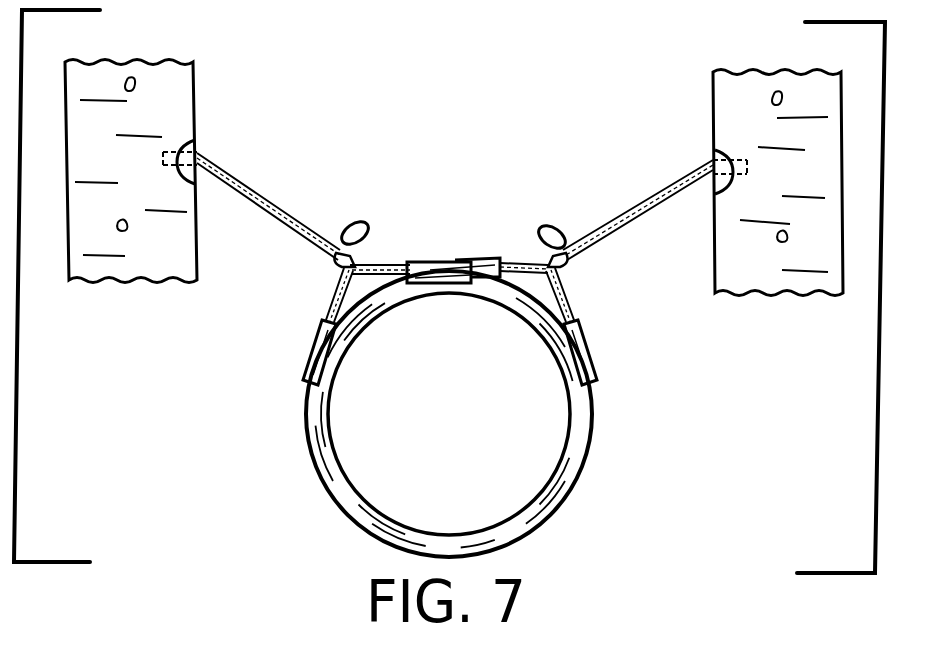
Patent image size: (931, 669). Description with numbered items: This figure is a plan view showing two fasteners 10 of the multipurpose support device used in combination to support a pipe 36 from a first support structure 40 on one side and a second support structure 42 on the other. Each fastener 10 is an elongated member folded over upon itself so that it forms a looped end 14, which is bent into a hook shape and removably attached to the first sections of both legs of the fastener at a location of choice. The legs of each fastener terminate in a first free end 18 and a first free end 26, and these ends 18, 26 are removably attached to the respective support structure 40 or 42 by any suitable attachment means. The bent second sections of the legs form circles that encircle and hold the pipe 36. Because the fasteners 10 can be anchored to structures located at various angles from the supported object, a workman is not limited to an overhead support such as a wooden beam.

The multipurpose support device 10 is at (444, 140).
The looped end 14 is at (367, 226).
The first free end 18 is at (181, 173).
The first free end 26 is at (195, 140).
The pipe 36 is at (573, 462).
The first support structure 40 is at (112, 270).
The second support structure 42 is at (765, 272).